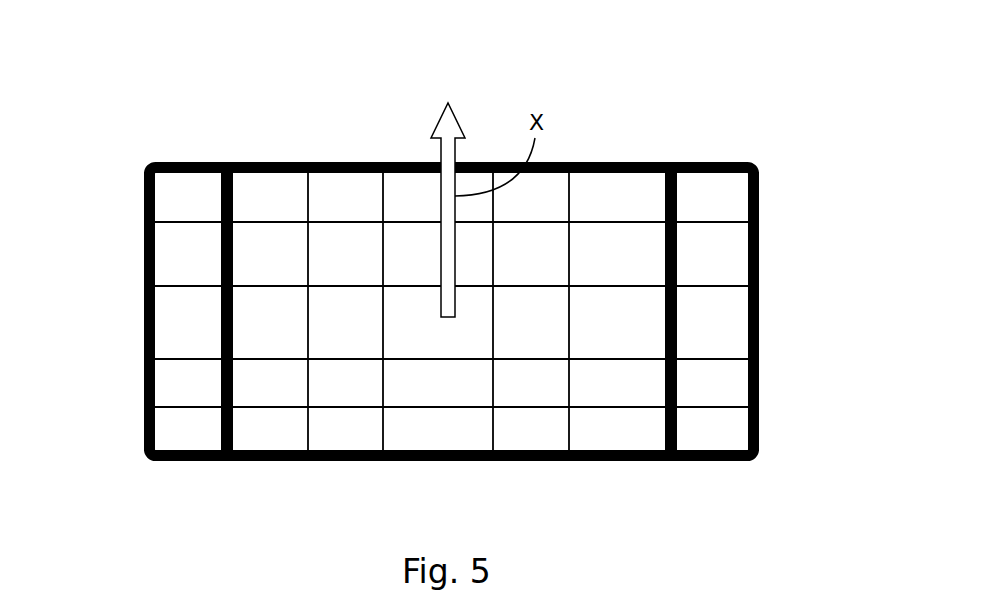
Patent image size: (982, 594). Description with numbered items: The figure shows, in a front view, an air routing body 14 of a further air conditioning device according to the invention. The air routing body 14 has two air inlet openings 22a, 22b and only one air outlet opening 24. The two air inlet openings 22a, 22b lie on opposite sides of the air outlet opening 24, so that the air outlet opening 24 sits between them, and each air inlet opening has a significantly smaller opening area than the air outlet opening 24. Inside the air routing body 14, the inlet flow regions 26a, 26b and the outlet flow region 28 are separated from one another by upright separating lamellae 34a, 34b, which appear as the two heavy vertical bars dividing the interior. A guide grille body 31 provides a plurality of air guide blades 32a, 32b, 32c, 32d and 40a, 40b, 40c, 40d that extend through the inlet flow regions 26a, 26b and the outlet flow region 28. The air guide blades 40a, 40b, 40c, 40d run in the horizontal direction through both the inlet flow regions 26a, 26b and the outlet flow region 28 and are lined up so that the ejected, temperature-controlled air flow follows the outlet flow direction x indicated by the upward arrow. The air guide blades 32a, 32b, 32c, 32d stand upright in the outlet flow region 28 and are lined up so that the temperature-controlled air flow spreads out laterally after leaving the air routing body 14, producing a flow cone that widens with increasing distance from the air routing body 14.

The air routing body 14 is at (745, 120).
The air inlet opening 22a is at (175, 252).
The air inlet opening 22b is at (730, 390).
The air outlet opening 24 is at (605, 193).
The inlet flow region 26a is at (187, 430).
The inlet flow region 26b is at (723, 320).
The outlet flow region 28 is at (633, 248).
The guide grille body 31 is at (310, 392).
The air guide blade 32a is at (310, 200).
The air guide blade 32b is at (385, 420).
The air guide blade 32c is at (493, 423).
The air guide blade 32d is at (570, 425).
The separating lamella 34a is at (232, 197).
The separating lamella 34b is at (675, 423).
The air guide blade 40a is at (184, 220).
The air guide blade 40b is at (723, 285).
The air guide blade 40c is at (192, 360).
The air guide blade 40d is at (267, 407).